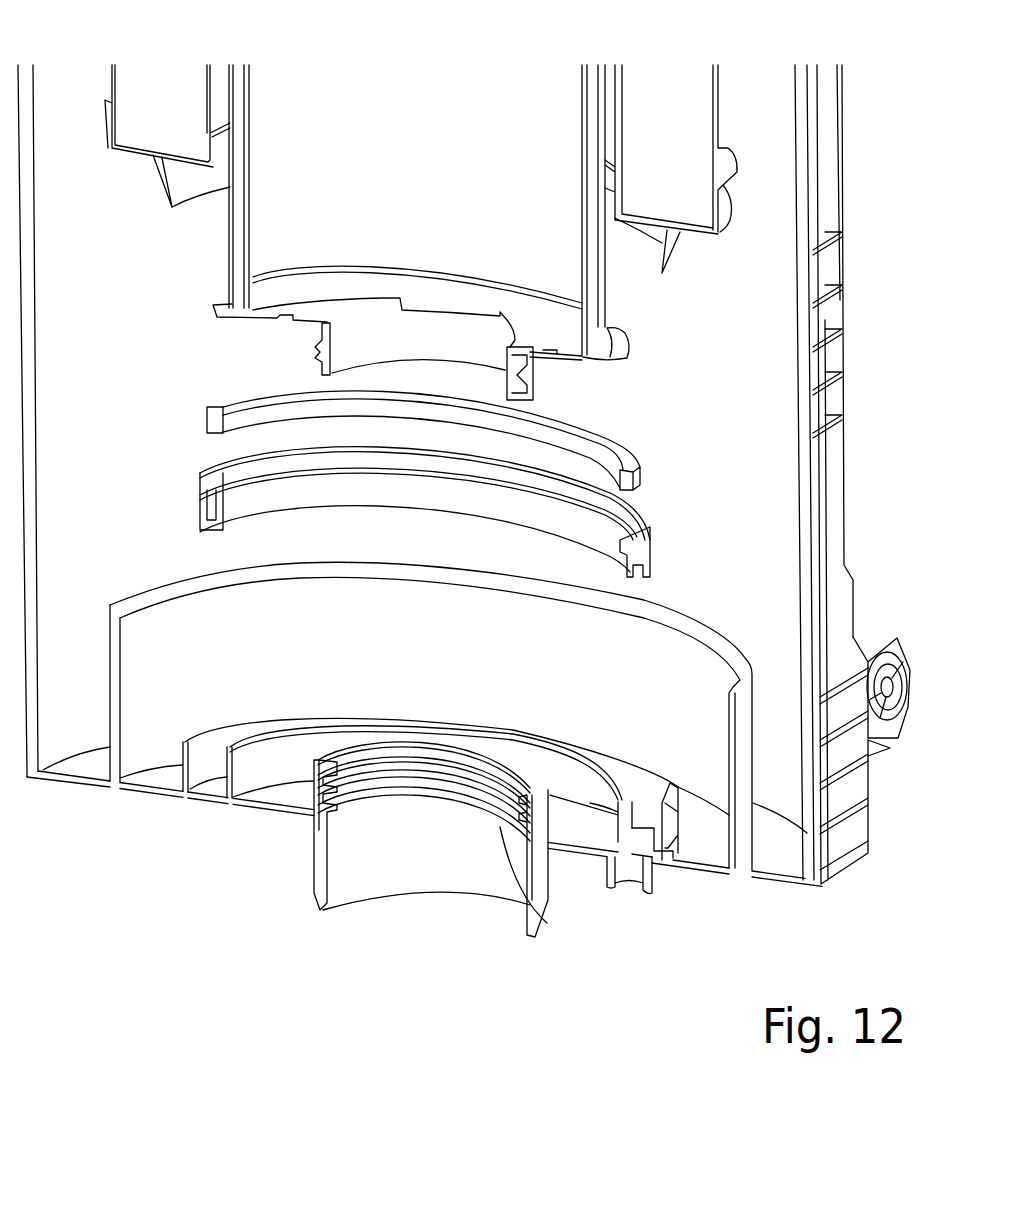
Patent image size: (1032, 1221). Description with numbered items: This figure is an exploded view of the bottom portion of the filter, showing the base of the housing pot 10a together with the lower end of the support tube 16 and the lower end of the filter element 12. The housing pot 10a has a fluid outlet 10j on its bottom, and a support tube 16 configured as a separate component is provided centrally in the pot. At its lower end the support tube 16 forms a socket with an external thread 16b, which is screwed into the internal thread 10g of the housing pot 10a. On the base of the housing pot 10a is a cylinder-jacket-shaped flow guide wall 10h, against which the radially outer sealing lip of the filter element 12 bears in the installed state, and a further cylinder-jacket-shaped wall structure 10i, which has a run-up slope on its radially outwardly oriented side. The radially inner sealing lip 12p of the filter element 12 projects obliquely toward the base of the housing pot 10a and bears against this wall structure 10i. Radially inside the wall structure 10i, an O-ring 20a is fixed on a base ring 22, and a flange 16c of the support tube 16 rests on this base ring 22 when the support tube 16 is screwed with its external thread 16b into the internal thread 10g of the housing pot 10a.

The housing pot 10a is at (825, 528).
The internal thread 10g is at (543, 902).
The flow guide wall 10h is at (743, 787).
The wall structure 10i is at (678, 858).
The fluid outlet 10j is at (440, 850).
The filter element 12 is at (177, 97).
The radially inner sealing lip 12p is at (672, 250).
The support tube 16 is at (280, 212).
The external thread 16b is at (533, 383).
The flange 16c is at (613, 347).
The O-ring 20a is at (207, 410).
The base ring 22 is at (200, 492).